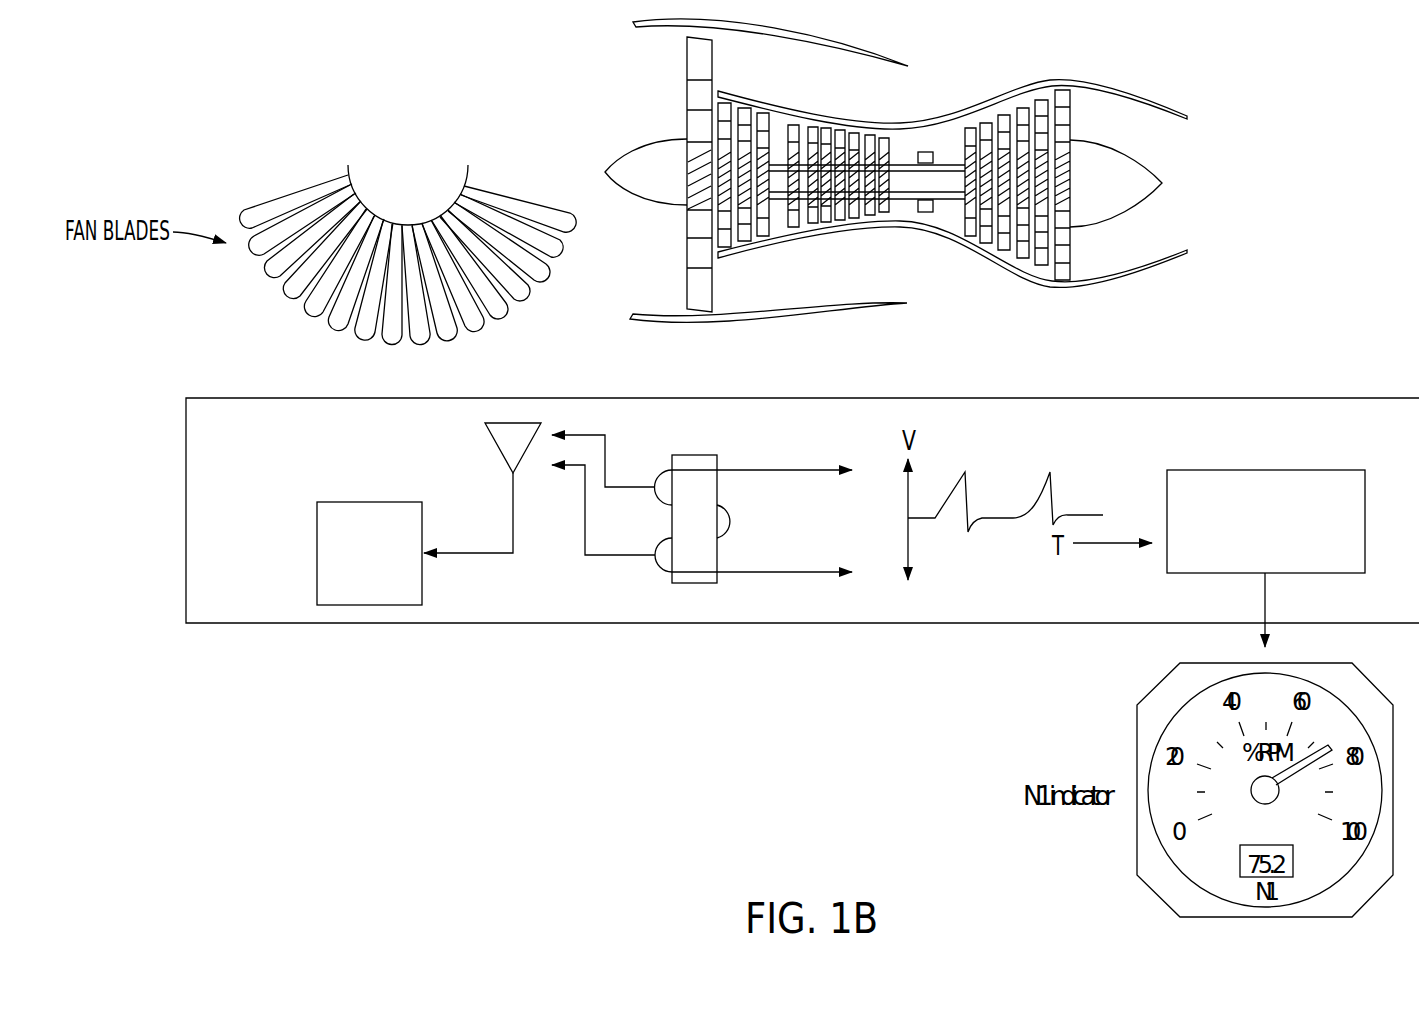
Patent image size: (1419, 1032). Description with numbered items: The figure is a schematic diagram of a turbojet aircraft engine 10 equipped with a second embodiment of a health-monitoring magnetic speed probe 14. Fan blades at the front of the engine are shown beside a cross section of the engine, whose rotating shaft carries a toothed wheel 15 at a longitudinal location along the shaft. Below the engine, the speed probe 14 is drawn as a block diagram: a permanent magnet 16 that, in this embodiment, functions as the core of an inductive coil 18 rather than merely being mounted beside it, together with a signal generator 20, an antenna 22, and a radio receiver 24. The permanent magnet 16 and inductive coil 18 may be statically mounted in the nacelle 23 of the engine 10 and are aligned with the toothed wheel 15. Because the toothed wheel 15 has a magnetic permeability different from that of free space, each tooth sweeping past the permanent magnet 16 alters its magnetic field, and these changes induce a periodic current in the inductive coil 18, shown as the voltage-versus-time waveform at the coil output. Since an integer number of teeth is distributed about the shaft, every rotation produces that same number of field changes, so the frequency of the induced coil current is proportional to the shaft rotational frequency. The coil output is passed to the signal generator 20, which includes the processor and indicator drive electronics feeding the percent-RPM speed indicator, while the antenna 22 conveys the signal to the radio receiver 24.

The aircraft engine 10 is at (1240, 104).
The health-monitoring magnetic speed probe 14 is at (243, 398).
The toothed wheel 15 is at (928, 212).
The permanent magnet 16 is at (695, 455).
The inductive coil 18 is at (667, 572).
The signal generator 20 is at (1270, 470).
The antenna 22 is at (495, 443).
The nacelle 23 is at (900, 306).
The radio receiver 24 is at (368, 502).